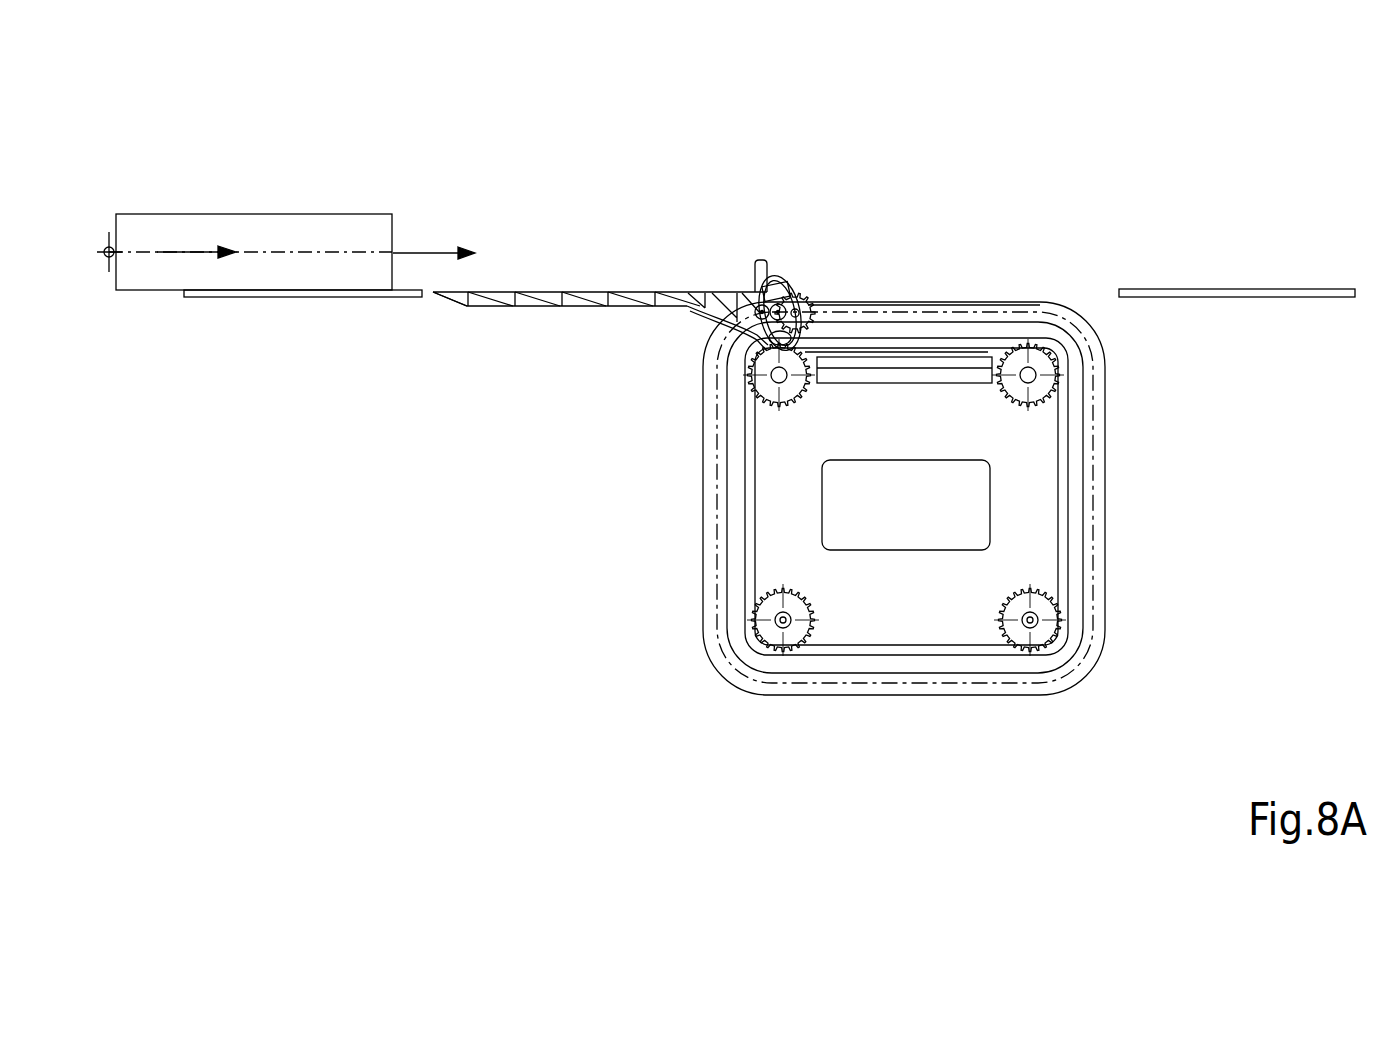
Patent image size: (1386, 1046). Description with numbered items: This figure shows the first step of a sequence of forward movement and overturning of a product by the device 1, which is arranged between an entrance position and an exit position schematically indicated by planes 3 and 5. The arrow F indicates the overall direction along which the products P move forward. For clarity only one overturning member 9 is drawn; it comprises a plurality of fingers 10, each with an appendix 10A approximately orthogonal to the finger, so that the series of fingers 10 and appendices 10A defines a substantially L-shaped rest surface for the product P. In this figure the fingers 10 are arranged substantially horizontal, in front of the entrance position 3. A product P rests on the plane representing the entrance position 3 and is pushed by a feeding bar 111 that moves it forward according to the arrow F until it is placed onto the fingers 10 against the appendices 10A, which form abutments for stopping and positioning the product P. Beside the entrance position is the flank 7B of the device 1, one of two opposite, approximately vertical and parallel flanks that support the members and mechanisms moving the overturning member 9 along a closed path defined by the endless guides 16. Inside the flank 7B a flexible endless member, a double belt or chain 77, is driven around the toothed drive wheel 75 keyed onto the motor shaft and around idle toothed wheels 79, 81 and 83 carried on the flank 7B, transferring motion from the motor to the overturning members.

The device 1 is at (1168, 122).
The plane 3 is at (405, 287).
The plane 5 is at (1263, 288).
The overturning member 9 is at (603, 270).
The fingers 10 is at (512, 308).
The appendix 10A is at (762, 267).
The endless guide 16 is at (940, 302).
The flank 7B is at (1005, 302).
The idle toothed wheel 79 is at (1053, 362).
The double toothed wheel 81 is at (817, 357).
The double chain 77 is at (1080, 483).
The toothed wheel 83 is at (795, 632).
The toothed chain wheel 75 is at (1037, 637).
The feeding bar 111 is at (108, 258).
The product P is at (362, 224).
The direction of forward movement F is at (190, 253).